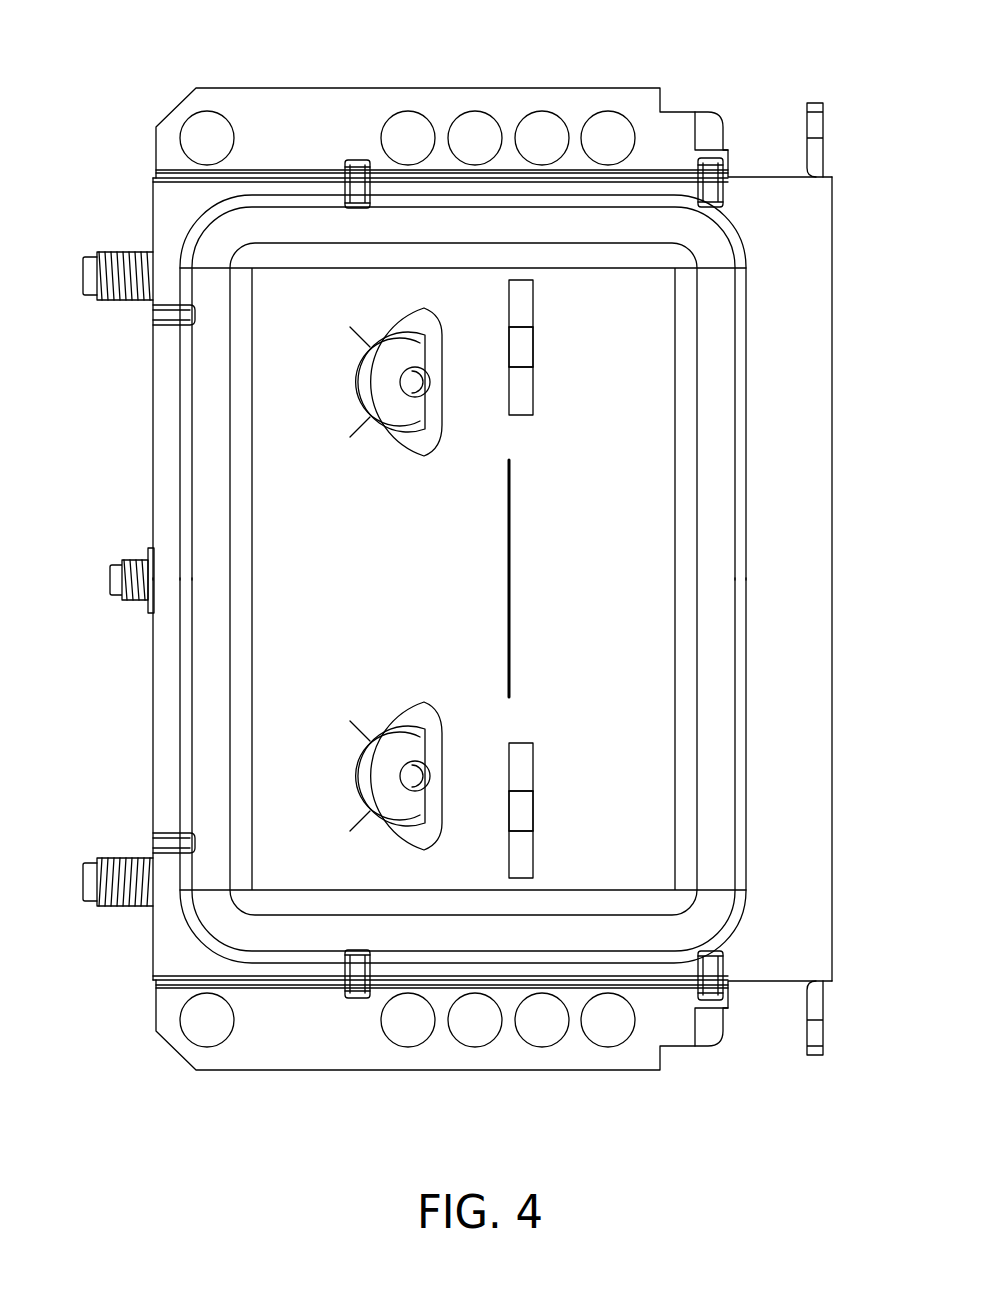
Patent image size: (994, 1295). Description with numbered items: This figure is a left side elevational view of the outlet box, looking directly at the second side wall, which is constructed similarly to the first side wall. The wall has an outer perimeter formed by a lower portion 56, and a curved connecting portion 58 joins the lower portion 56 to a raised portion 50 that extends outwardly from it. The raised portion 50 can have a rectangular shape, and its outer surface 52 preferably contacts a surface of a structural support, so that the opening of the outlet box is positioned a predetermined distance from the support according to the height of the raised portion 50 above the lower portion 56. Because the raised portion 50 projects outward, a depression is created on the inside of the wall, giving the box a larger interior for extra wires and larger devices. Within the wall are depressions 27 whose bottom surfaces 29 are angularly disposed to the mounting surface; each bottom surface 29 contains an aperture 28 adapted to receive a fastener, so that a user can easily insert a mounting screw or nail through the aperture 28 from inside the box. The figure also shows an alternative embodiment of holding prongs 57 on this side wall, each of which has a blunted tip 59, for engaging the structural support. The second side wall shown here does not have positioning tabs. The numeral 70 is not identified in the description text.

The depression 27 is at (350, 413).
The aperture 28 is at (410, 380).
The bottom surface 29 is at (388, 382).
The raised portion 50 is at (612, 317).
The outer surface 52 is at (608, 468).
The lower portion 56 is at (762, 622).
The holding prongs 57 is at (522, 296).
The curved connecting portion 58 is at (707, 375).
The blunted tip 59 is at (522, 352).
The mounting holes 70 is at (210, 143).